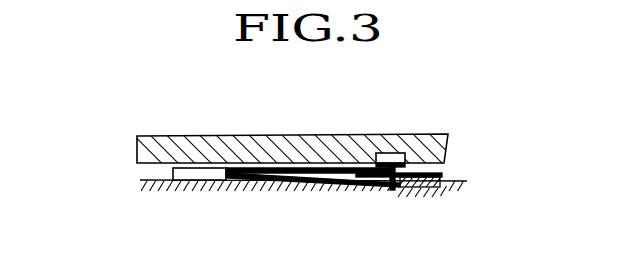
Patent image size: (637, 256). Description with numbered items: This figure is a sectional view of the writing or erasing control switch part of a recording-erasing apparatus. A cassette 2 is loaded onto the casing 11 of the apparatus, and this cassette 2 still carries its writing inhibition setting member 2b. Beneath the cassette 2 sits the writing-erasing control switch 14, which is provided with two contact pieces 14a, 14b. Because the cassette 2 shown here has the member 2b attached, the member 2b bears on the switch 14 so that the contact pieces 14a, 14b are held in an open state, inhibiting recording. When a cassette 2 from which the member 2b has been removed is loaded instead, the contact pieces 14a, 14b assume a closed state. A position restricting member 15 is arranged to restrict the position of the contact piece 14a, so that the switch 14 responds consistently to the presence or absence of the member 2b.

The cassette 2 is at (305, 140).
The writing inhibition setting member 2b is at (407, 150).
The casing 11 is at (423, 188).
The writing-erasing control switch 14 is at (195, 181).
The contact piece 14a is at (310, 182).
The contact piece 14b is at (353, 190).
The position restricting member 15 is at (437, 173).